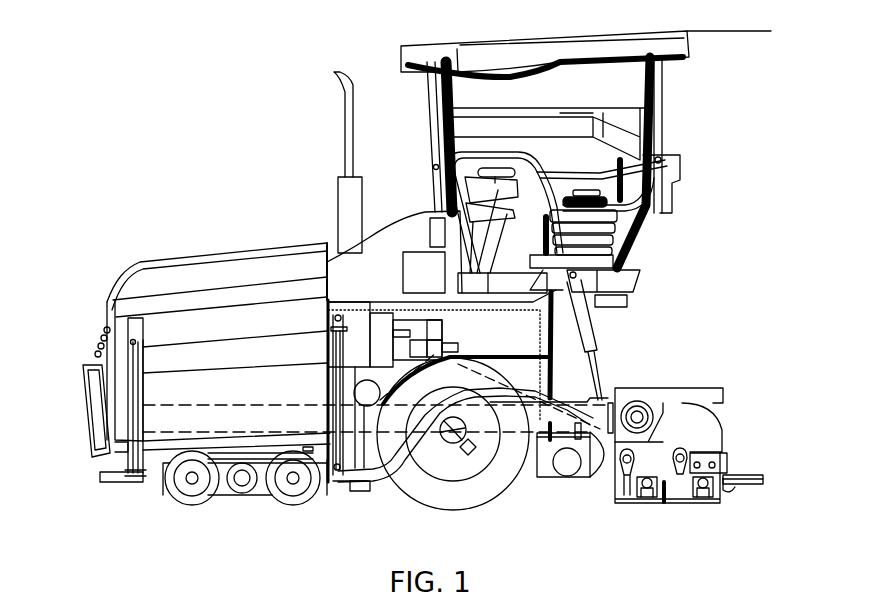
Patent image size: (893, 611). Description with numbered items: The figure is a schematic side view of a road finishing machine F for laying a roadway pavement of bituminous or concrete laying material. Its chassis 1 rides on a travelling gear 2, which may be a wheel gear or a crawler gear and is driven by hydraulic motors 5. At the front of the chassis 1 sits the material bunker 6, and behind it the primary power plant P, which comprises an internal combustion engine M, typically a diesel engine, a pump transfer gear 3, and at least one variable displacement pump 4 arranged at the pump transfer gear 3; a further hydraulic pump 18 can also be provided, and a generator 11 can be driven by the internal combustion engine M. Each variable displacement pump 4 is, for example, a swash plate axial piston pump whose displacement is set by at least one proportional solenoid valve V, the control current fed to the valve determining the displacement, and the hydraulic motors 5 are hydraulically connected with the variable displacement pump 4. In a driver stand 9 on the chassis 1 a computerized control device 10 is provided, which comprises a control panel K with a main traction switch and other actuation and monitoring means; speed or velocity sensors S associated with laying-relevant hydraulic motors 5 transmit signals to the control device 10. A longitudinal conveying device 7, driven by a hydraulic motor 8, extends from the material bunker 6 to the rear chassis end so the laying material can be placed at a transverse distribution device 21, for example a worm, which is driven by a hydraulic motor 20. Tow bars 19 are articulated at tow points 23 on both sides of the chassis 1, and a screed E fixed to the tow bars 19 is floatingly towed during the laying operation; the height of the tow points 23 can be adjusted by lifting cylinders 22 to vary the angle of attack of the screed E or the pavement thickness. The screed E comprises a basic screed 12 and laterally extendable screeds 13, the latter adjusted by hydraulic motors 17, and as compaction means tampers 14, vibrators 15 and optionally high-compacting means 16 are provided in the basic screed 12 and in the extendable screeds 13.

The chassis 1 is at (153, 463).
The travelling gear 2 is at (417, 487).
The pump transfer gear 3 is at (380, 322).
The variable displacement pump 4 is at (417, 343).
The hydraulic motor 5 is at (453, 463).
The material bunker 6 is at (207, 327).
The longitudinal conveying device 7 is at (245, 432).
The hydraulic motor 8 is at (357, 392).
The driver stand 9 is at (620, 92).
The control device 10 is at (478, 187).
The generator 11 is at (437, 320).
The basic screed 12 is at (648, 438).
The laterally extendable screed 13 is at (705, 430).
The tamper 14 is at (623, 500).
The vibrator 15 is at (647, 487).
The high-compacting means 16 is at (663, 493).
The hydraulic motor 17 is at (635, 410).
The hydraulic pump 18 is at (337, 326).
The tow bar 19 is at (385, 480).
The hydraulic motor 20 is at (563, 468).
The transverse distribution device 21 is at (597, 457).
The lifting cylinder 22 is at (337, 352).
The tow point 23 is at (340, 467).
The primary power plant P is at (312, 226).
The internal combustion engine M is at (354, 302).
The control panel K is at (513, 190).
The proportional solenoid valve V is at (458, 345).
The speed or velocity sensor S is at (462, 457).
The screed E is at (734, 372).
The road finishing machine F is at (684, 148).